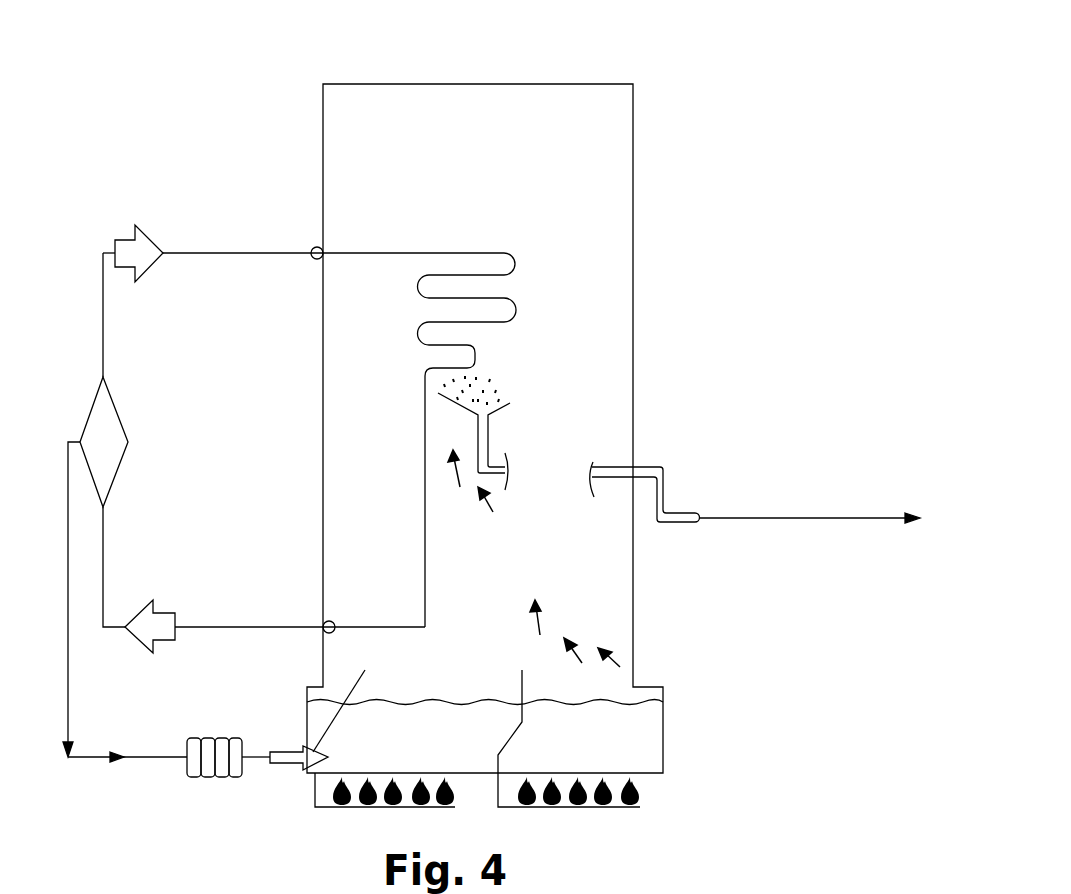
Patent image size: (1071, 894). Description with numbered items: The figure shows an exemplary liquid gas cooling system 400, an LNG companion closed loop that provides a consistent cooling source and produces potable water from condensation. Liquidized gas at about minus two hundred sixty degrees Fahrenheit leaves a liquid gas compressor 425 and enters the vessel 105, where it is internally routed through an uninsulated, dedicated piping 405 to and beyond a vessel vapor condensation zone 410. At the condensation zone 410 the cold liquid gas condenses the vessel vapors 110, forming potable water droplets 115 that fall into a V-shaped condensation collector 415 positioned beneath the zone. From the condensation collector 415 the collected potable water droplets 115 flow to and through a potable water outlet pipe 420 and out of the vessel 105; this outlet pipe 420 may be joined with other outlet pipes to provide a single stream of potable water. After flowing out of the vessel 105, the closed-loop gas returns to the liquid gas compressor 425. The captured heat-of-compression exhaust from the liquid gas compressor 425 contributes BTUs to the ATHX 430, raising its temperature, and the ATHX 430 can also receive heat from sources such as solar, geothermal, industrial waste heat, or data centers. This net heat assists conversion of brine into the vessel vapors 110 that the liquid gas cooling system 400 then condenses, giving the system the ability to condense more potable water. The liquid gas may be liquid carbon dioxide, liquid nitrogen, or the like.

The liquid gas cooling system 400 is at (724, 33).
The vessel 105 is at (485, 445).
The vessel vapors 110 is at (582, 635).
The potable water droplets 115 is at (498, 392).
The piping 405 is at (103, 328).
The vessel vapor condensation zone 410 is at (442, 253).
The V-shaped condensation collector 415 is at (500, 417).
The potable water outlet pipe 420 is at (607, 485).
The liquid gas compressor 425 is at (118, 410).
The ATHX 430 is at (205, 778).